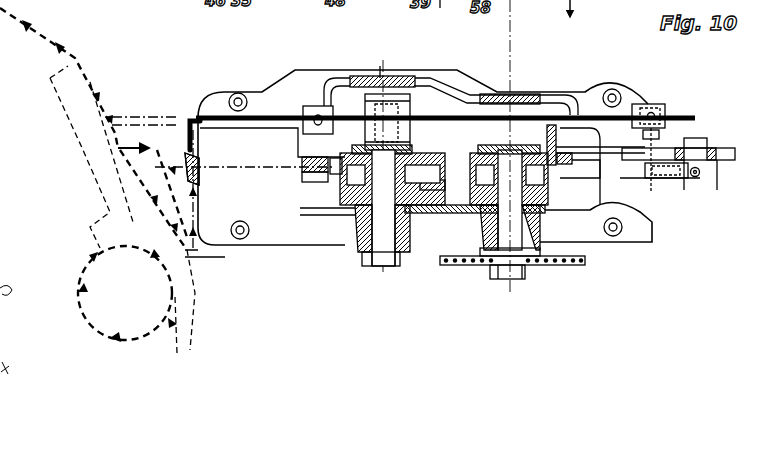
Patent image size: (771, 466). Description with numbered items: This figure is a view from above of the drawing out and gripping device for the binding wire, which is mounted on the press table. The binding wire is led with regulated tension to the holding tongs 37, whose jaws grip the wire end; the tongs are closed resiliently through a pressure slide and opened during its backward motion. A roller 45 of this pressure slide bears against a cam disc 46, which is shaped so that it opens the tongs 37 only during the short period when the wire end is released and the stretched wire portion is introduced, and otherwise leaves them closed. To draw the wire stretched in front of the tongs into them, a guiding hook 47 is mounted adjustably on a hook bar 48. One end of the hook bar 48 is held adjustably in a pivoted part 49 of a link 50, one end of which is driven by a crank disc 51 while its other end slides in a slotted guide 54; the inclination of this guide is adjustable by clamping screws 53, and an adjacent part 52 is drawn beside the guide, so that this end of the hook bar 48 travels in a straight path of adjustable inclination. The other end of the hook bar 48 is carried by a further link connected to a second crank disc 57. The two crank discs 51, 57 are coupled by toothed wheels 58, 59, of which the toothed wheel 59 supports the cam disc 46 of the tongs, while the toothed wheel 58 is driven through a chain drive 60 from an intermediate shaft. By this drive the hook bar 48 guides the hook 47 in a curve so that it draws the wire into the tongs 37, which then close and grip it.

The holding tongs 37 is at (201, 178).
The roller 45 is at (294, 173).
The cam disc 46 is at (329, 141).
The guiding hook 47 is at (190, 147).
The hook bar 48 is at (432, 120).
The pivoted part 49 is at (664, 108).
The link 50 is at (604, 128).
The crank disc 51 is at (506, 150).
The bracket 52 is at (634, 155).
The clamping screws 53 is at (702, 136).
The slotted guide 54 is at (560, 154).
The second crank disc 57 is at (366, 146).
The toothed wheel 58 is at (453, 214).
The toothed wheel 59 is at (440, 178).
The chain drive 60 is at (580, 263).